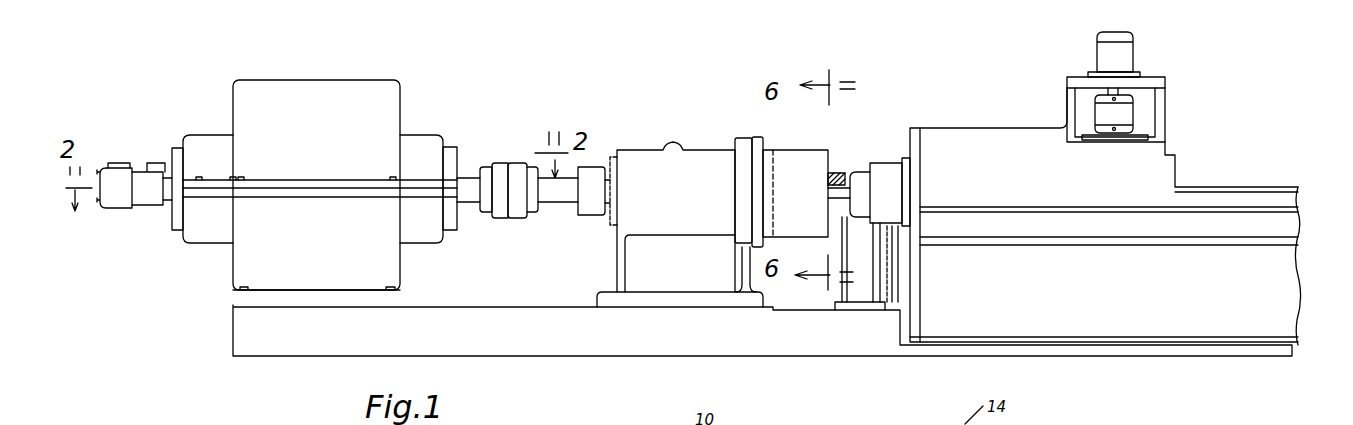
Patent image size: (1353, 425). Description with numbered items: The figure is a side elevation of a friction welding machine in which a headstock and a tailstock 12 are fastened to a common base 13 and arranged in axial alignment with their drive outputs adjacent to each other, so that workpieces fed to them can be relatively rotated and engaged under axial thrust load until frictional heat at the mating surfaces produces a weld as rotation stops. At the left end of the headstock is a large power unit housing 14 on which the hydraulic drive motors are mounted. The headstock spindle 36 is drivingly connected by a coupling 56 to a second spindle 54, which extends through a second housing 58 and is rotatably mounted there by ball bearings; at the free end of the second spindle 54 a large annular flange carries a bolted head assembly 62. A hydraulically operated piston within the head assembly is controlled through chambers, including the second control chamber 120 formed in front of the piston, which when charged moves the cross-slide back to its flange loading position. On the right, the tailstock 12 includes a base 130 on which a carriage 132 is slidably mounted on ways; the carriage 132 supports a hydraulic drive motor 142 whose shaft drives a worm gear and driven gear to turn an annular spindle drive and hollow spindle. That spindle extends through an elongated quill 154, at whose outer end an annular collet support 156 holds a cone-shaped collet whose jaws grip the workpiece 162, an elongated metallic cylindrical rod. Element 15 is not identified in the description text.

The tailstock 12 is at (1037, 104).
The base 13 is at (609, 124).
The power unit housing 14 is at (382, 112).
The base plate 15 is at (612, 356).
The spindle 36 is at (470, 200).
The second spindle 54 is at (557, 200).
The coupling 56 is at (521, 218).
The second housing 58 is at (688, 166).
The head assembly 62 is at (791, 143).
The second control chamber 120 is at (842, 172).
The base 130 is at (1260, 272).
The carriage 132 is at (1152, 160).
The hydraulic drive motor 142 is at (1125, 50).
The quill 154 is at (890, 182).
The collet support 156 is at (862, 218).
The workpiece 162 is at (830, 206).